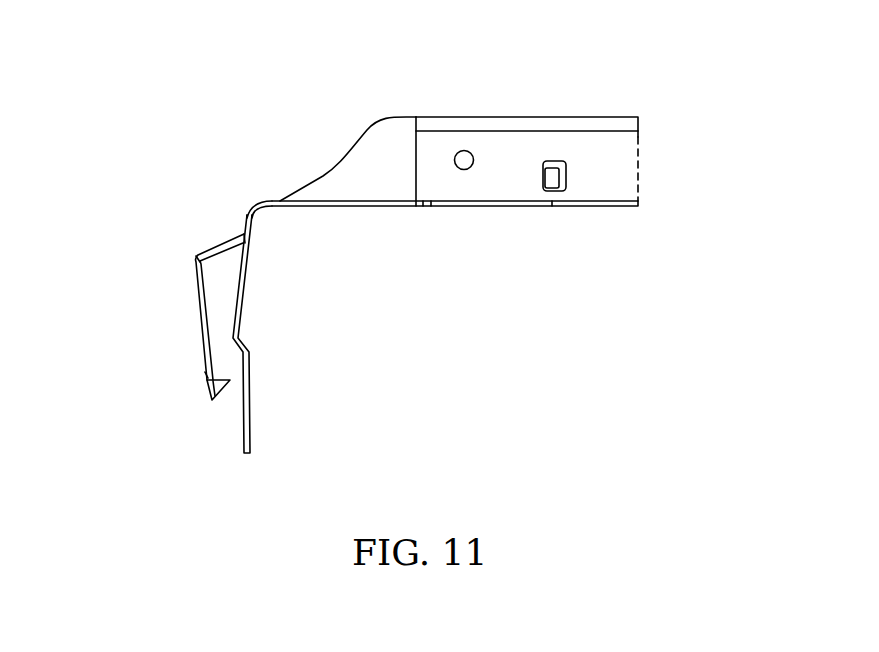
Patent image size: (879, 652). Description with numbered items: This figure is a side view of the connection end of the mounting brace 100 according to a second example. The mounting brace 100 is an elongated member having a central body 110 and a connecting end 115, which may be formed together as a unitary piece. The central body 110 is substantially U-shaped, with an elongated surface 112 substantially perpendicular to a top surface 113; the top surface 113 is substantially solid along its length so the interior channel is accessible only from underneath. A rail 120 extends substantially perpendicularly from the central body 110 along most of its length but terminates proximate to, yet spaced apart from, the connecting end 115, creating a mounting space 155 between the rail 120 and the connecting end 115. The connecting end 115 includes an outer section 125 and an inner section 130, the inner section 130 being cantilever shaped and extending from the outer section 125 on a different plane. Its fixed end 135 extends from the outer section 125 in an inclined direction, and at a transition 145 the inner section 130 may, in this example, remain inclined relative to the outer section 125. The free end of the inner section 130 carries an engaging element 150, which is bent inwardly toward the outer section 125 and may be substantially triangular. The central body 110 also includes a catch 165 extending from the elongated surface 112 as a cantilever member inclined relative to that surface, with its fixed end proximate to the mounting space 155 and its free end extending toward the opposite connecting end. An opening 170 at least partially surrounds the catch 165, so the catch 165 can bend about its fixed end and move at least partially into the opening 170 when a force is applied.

The mounting brace 100 is at (373, 70).
The central body 110 is at (629, 143).
The elongated surface 112 is at (593, 146).
The top surface 113 is at (466, 116).
The connecting end 115 is at (146, 156).
The rail 120 is at (623, 208).
The outer section 125 is at (251, 403).
The inner section 130 is at (197, 305).
The fixed end 135 is at (243, 237).
The transition 145 is at (201, 254).
The engaging element 150 is at (213, 404).
The mounting space 155 is at (455, 218).
The catch 165 is at (552, 192).
The opening 170 is at (582, 178).